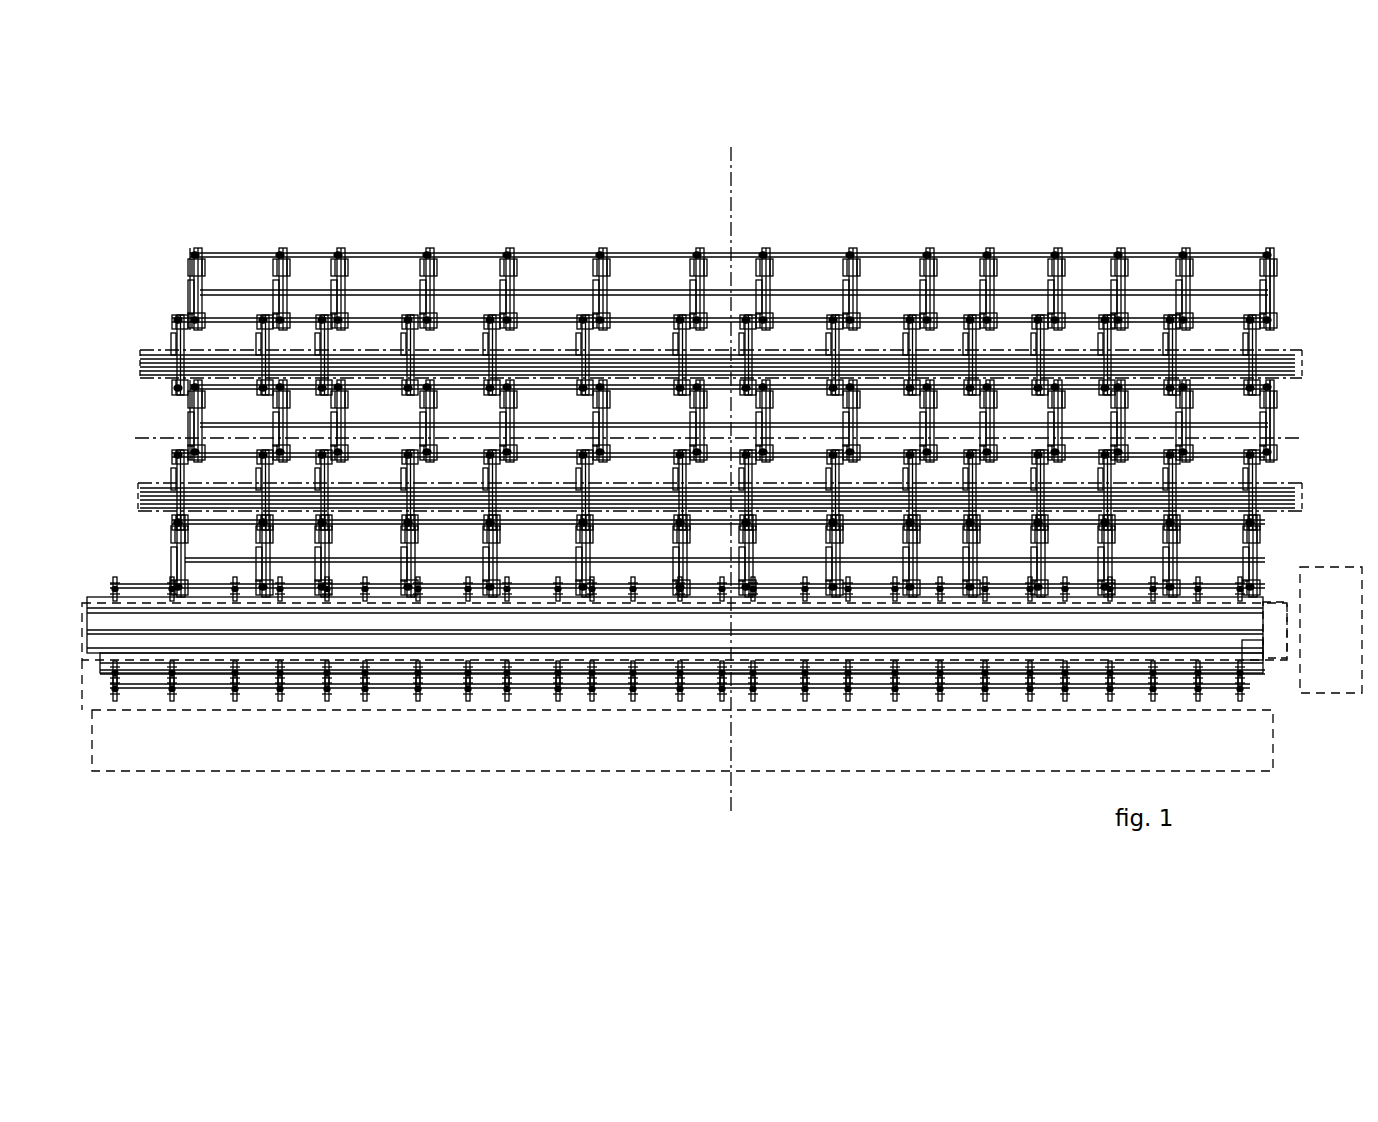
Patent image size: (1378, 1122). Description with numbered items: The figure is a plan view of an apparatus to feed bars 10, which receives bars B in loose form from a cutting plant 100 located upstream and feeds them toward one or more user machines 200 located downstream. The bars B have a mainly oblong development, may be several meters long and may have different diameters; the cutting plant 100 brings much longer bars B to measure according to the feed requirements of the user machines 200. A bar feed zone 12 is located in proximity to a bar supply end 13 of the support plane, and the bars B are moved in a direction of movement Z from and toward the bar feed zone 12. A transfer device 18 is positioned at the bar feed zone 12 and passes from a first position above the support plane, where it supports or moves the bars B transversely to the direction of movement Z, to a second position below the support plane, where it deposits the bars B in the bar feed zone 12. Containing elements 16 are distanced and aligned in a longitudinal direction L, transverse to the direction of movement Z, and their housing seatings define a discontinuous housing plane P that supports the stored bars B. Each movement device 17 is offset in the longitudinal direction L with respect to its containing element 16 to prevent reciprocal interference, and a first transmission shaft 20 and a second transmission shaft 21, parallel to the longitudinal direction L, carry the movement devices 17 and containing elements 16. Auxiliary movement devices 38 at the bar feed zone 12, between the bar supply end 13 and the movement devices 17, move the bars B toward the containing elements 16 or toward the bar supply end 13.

The apparatus to feed bars 10 is at (1258, 227).
The bar feed zone 12 is at (85, 658).
The bar supply end 13 is at (233, 692).
The containing elements 16 is at (274, 290).
The movement devices 17 is at (432, 291).
The transfer device 18 is at (88, 622).
The first transmission shaft 20 is at (360, 255).
The second transmission shaft 21 is at (357, 384).
The auxiliary movement devices 38 is at (168, 675).
The cutting plant 100 is at (1312, 698).
The user machines 200 is at (596, 786).
The bars B is at (1293, 370).
The longitudinal direction L is at (155, 440).
The housing plane P is at (152, 380).
The direction of movement Z is at (731, 165).